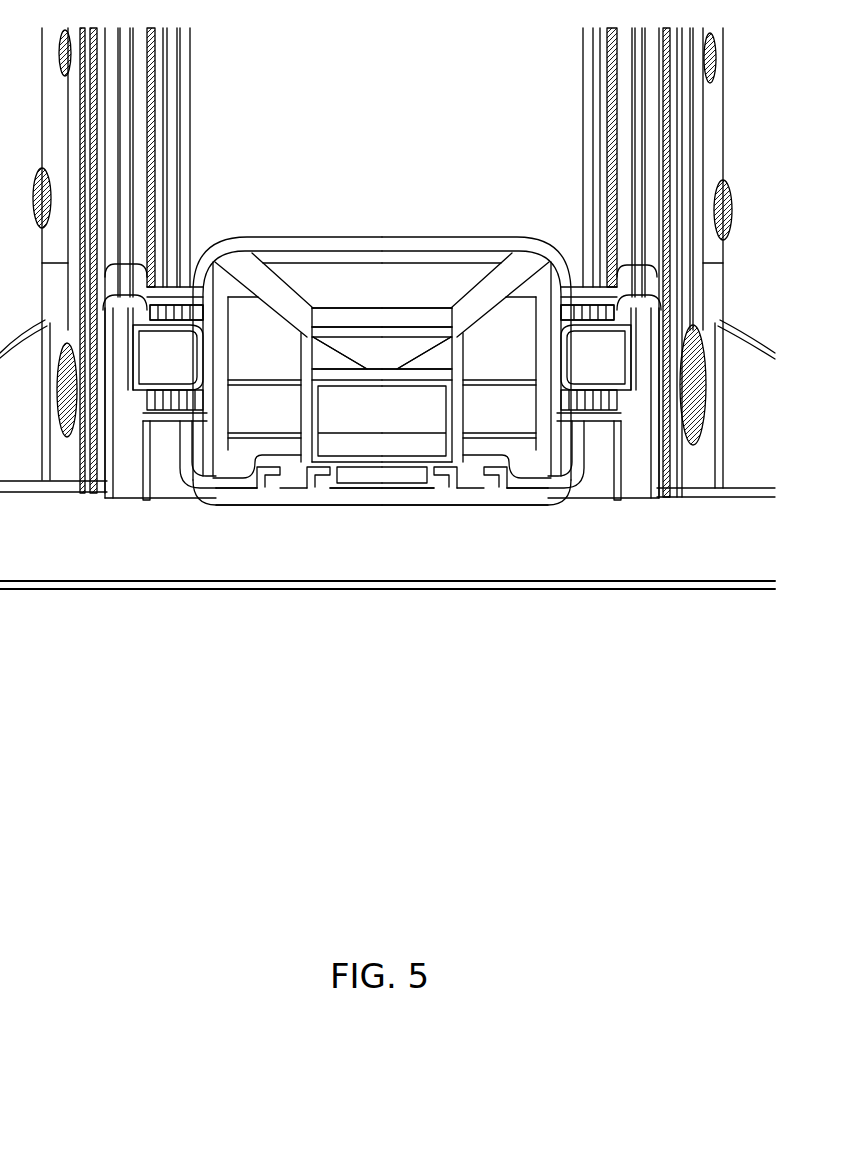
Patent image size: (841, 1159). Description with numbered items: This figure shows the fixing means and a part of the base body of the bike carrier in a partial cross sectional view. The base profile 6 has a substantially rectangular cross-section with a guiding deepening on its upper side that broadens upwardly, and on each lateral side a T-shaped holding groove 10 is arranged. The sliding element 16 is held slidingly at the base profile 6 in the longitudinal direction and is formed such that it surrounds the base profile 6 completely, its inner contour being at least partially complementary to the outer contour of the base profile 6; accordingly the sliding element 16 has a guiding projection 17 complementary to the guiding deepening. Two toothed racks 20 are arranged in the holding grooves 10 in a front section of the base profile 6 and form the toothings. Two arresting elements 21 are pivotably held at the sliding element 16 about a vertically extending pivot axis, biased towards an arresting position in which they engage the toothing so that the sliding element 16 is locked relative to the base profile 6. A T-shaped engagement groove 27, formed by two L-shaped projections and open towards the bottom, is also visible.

The base profile 6 is at (452, 470).
The T-shaped holding groove 10 is at (382, 491).
The sliding element 16 is at (516, 235).
The guiding projection 17 is at (383, 320).
The toothed rack 20 is at (580, 478).
The arresting element 21 is at (157, 358).
The T-shaped engagement groove 27 is at (355, 352).